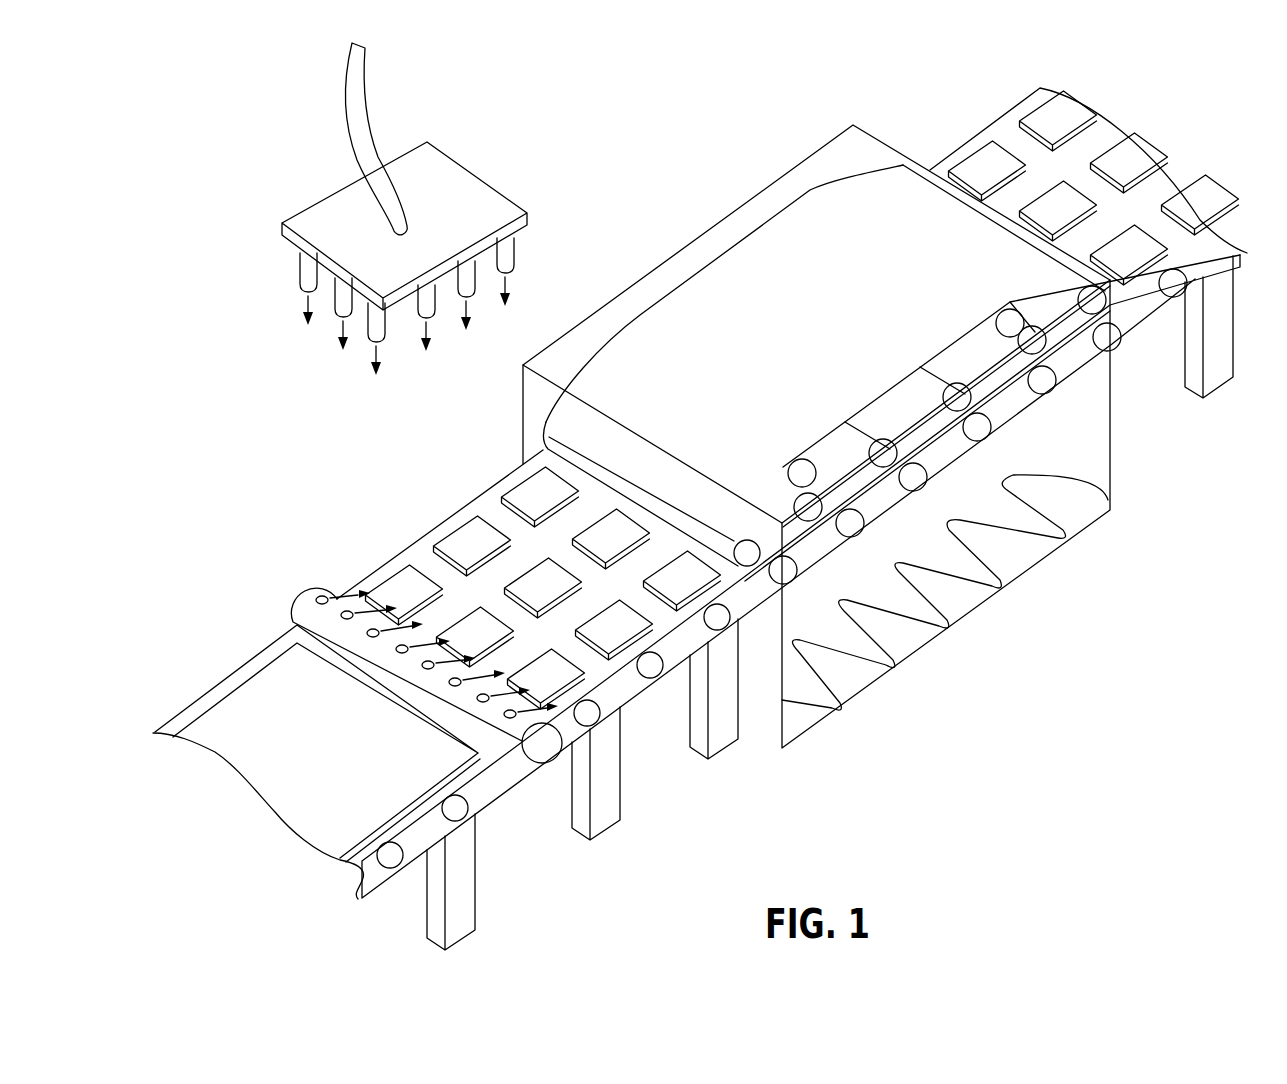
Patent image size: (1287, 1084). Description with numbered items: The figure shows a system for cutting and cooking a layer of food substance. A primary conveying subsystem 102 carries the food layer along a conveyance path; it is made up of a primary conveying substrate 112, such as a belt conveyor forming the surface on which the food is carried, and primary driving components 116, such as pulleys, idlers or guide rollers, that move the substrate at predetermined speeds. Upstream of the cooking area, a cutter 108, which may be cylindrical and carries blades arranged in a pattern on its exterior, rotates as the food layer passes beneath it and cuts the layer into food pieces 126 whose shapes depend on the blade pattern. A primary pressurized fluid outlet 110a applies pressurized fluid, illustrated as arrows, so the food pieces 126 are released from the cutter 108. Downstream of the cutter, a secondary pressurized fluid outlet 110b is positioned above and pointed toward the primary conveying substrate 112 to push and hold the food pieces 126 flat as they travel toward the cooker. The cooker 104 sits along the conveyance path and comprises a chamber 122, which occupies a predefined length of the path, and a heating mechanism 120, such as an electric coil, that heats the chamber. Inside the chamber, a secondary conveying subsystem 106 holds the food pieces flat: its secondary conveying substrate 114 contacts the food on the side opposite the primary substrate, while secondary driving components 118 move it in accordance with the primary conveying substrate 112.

The primary conveying subsystem 102 is at (386, 899).
The cooker 104 is at (676, 244).
The secondary conveying subsystem 106 is at (912, 414).
The cutter 108 is at (290, 607).
The primary pressurized fluid outlet 110a is at (322, 598).
The secondary pressurized fluid outlet 110b is at (259, 208).
The primary conveying substrate 112 is at (602, 665).
The secondary conveying substrate 114 is at (815, 338).
The primary driving components 116 is at (458, 807).
The secondary driving components 118 is at (922, 378).
The heating mechanism 120 is at (998, 588).
The chamber 122 is at (524, 430).
The food pieces 126 is at (683, 582).